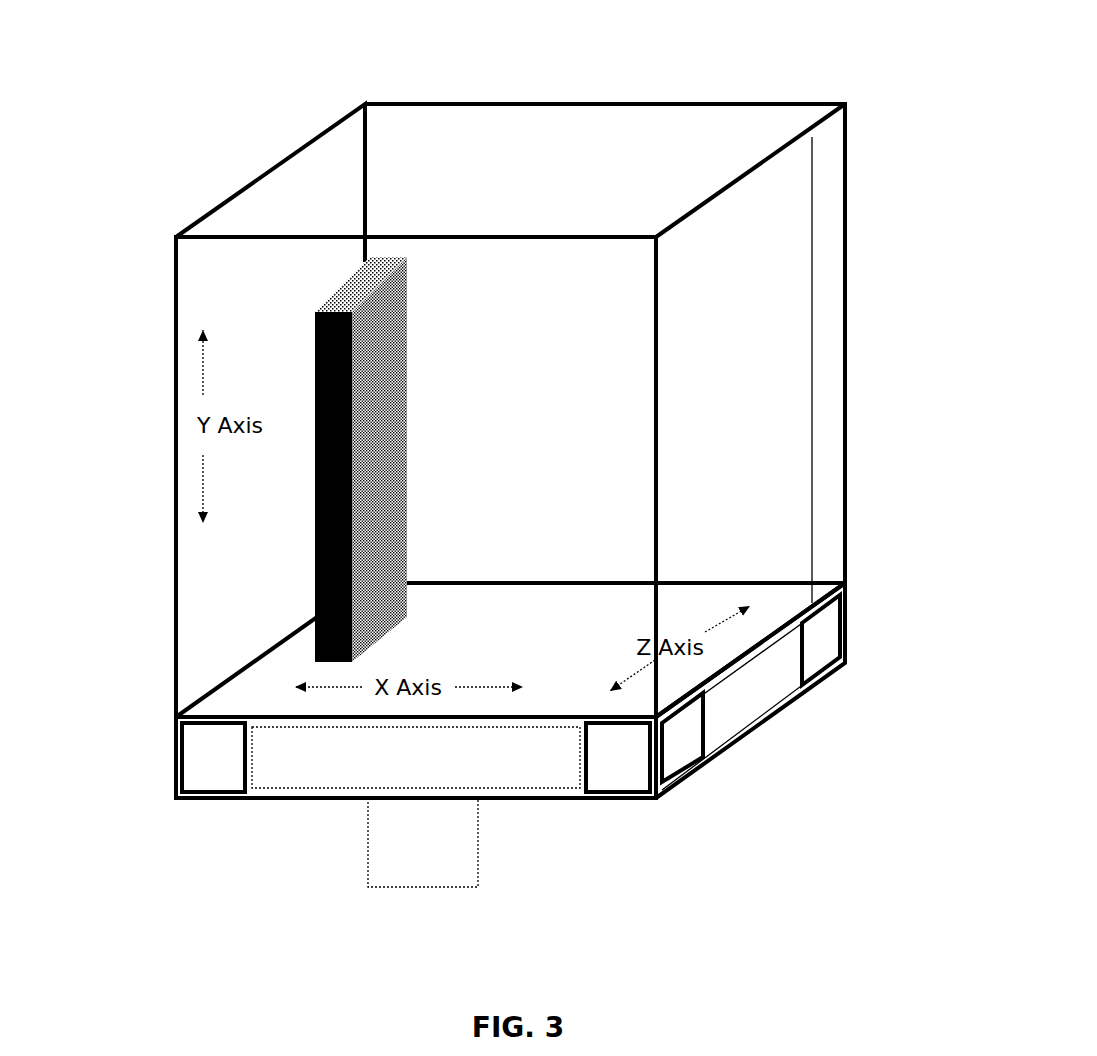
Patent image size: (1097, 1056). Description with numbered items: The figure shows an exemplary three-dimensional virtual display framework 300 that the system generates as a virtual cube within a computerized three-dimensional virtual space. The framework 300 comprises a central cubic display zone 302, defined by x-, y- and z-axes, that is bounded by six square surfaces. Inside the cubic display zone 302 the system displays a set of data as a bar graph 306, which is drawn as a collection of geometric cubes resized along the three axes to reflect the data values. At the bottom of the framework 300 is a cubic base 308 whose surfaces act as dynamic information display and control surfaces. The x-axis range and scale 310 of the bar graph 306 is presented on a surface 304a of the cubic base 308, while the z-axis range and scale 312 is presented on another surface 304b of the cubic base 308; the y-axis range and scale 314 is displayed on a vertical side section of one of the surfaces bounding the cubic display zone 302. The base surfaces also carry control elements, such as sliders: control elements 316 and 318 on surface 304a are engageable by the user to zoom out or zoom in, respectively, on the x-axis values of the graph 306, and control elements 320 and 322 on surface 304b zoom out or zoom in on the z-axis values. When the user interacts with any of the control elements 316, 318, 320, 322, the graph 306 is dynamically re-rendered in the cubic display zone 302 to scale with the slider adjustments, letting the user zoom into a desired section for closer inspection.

The virtual display framework 300 is at (872, 143).
The cubic display zone 302 is at (510, 528).
The surface 304a is at (213, 612).
The surface 304b is at (785, 217).
The bar graph 306 is at (377, 468).
The cubic base 308 is at (165, 752).
The x-axis range and scale 310 is at (416, 807).
The z-axis range and scale 312 is at (750, 690).
The y-axis range and scale 314 is at (825, 397).
The control element 316 is at (213, 770).
The control element 318 is at (612, 770).
The control element 320 is at (686, 737).
The control element 322 is at (823, 637).